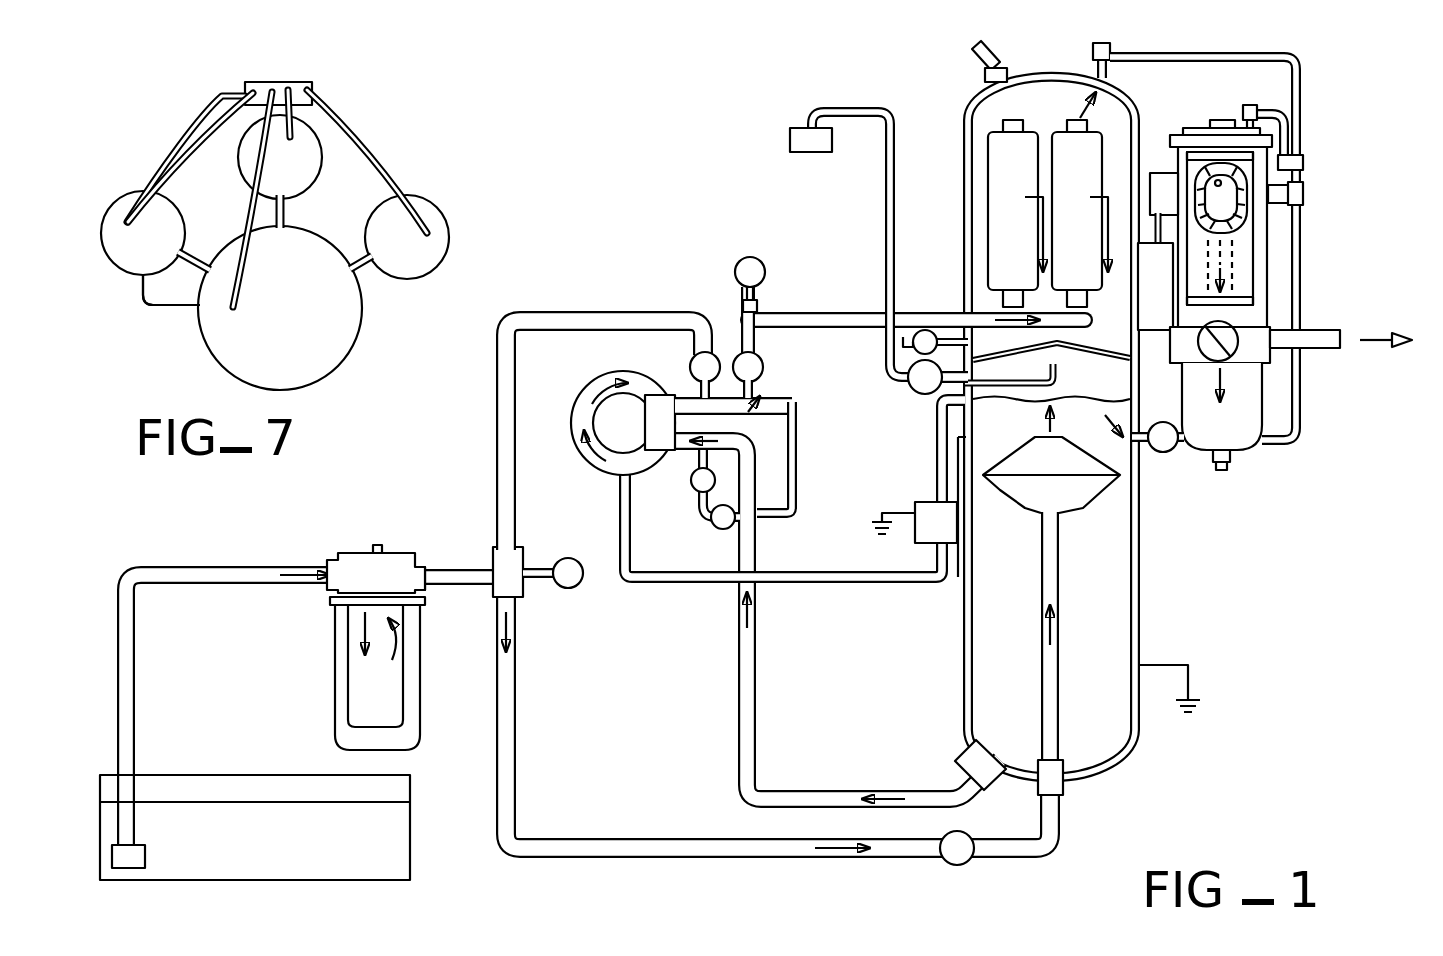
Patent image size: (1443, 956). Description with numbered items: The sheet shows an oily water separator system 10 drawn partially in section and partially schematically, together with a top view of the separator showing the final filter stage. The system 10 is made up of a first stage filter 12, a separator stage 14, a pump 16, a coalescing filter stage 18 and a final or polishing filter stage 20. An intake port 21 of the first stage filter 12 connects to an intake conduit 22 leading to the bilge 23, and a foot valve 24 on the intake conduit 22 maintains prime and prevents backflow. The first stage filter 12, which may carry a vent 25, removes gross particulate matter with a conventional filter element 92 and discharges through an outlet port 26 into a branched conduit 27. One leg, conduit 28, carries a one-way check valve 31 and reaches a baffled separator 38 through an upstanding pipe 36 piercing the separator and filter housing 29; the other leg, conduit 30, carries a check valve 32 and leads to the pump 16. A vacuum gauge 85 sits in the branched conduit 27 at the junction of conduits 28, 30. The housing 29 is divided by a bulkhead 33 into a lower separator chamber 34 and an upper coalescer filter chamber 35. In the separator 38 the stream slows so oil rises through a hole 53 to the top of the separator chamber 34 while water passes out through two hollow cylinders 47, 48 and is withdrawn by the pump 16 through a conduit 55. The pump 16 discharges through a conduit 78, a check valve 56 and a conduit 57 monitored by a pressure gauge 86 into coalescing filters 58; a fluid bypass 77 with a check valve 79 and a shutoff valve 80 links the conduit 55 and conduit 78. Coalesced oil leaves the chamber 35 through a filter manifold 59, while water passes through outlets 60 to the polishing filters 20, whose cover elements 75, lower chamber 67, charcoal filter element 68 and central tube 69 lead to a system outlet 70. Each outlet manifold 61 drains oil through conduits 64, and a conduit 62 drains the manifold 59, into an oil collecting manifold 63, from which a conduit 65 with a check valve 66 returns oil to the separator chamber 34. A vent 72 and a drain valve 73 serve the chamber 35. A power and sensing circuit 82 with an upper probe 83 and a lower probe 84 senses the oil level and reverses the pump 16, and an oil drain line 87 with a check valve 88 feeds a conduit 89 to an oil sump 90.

In FIG. 1, the oily water separator system 10 is at (724, 212).
In FIG. 1, the first stage filter 12 is at (359, 530).
In FIG. 1, the separator stage 14 is at (1144, 643).
In FIG. 1, the pump 16 is at (592, 388).
In FIG. 1, the coalescing filter stage 18 is at (960, 198).
In FIG. 7, the final or polishing filter 20 is at (321, 153).
In FIG. 1, the final or polishing filter 20 is at (1214, 110).
In FIG. 1, the intake port 21 is at (330, 560).
In FIG. 1, the intake conduit 22 is at (205, 567).
In FIG. 1, the bilge 23 is at (410, 848).
In FIG. 1, the foot valve 24 is at (218, 838).
In FIG. 1, the vent 25 is at (384, 549).
In FIG. 1, the outlet port 26 is at (428, 568).
In FIG. 1, the branched conduit 27 is at (455, 586).
In FIG. 1, the conduit 28 is at (519, 652).
In FIG. 7, the separator and filter housing 29 is at (350, 360).
In FIG. 1, the separator and filter housing 29 is at (1141, 574).
In FIG. 1, the conduit 30 is at (536, 312).
In FIG. 1, the one-way check valve 31 is at (970, 862).
In FIG. 1, the check valve 32 is at (699, 355).
In FIG. 1, the bulkhead 33 is at (1081, 351).
In FIG. 1, the separator chamber 34 is at (997, 742).
In FIG. 1, the coalescer filter chamber 35 is at (1037, 100).
In FIG. 1, the upstanding pipe 36 is at (1060, 706).
In FIG. 1, the baffled separator 38 is at (1037, 518).
In FIG. 1, the hollow cylinder 47 is at (997, 490).
In FIG. 1, the hollow cylinder 48 is at (1095, 495).
In FIG. 1, the hole 53 is at (1040, 437).
In FIG. 1, the conduit 55 is at (877, 790).
In FIG. 1, the check valve 56 is at (763, 371).
In FIG. 1, the conduit 57 is at (859, 312).
In FIG. 1, the coalescing filter 58 is at (999, 171).
In FIG. 1, the filter manifold 59 is at (1092, 56).
In FIG. 7, the outlet 60 is at (199, 254).
In FIG. 1, the outlet 60 is at (1151, 326).
In FIG. 1, the outlet manifold 61 is at (1250, 105).
In FIG. 7, the conduit 62 is at (247, 203).
In FIG. 1, the conduit 62 is at (1198, 53).
In FIG. 1, the oil collecting manifold 63 is at (1306, 195).
In FIG. 7, the conduit 64 is at (211, 124).
In FIG. 1, the conduit 64 is at (1300, 103).
In FIG. 1, the conduit 65 is at (1303, 264).
In FIG. 1, the check valve 66 is at (1168, 453).
In FIG. 1, the lower chamber 67 is at (1208, 438).
In FIG. 1, the charcoal filter element 68 is at (1255, 286).
In FIG. 1, the central tube 69 is at (1236, 206).
In FIG. 1, the system outlet 70 is at (1343, 334).
In FIG. 1, the vent 72 is at (970, 55).
In FIG. 1, the drain valve 73 is at (928, 329).
In FIG. 1, the cover element 75 is at (1189, 135).
In FIG. 1, the fluid bypass 77 is at (805, 487).
In FIG. 1, the conduit 78 is at (795, 400).
In FIG. 1, the check valve 79 is at (718, 531).
In FIG. 1, the shutoff valve 80 is at (695, 489).
In FIG. 1, the power and sensing circuit 82 is at (915, 538).
In FIG. 1, the upper probe 83 is at (937, 410).
In FIG. 1, the lower probe 84 is at (958, 437).
In FIG. 1, the vacuum gauge 85 is at (568, 557).
In FIG. 1, the pressure gauge 86 is at (766, 270).
In FIG. 1, the oil drain line 87 is at (1056, 368).
In FIG. 1, the check valve 88 is at (920, 395).
In FIG. 1, the conduit 89 is at (885, 174).
In FIG. 1, the sump 90 is at (790, 142).
In FIG. 1, the filter element 92 is at (356, 690).